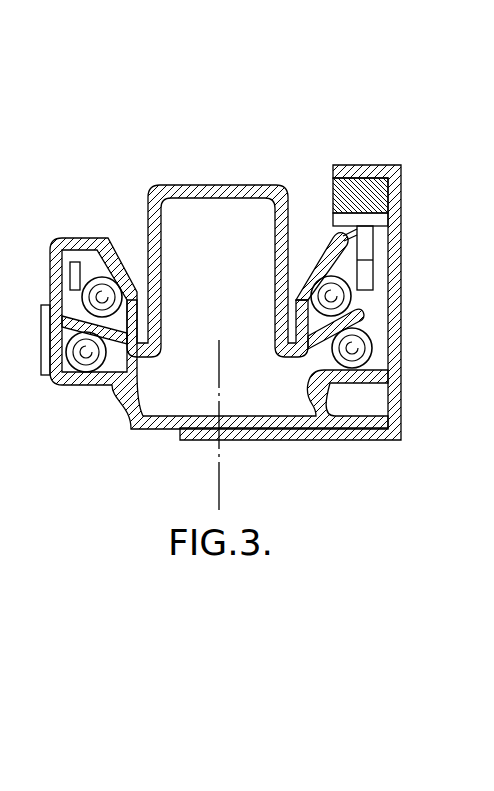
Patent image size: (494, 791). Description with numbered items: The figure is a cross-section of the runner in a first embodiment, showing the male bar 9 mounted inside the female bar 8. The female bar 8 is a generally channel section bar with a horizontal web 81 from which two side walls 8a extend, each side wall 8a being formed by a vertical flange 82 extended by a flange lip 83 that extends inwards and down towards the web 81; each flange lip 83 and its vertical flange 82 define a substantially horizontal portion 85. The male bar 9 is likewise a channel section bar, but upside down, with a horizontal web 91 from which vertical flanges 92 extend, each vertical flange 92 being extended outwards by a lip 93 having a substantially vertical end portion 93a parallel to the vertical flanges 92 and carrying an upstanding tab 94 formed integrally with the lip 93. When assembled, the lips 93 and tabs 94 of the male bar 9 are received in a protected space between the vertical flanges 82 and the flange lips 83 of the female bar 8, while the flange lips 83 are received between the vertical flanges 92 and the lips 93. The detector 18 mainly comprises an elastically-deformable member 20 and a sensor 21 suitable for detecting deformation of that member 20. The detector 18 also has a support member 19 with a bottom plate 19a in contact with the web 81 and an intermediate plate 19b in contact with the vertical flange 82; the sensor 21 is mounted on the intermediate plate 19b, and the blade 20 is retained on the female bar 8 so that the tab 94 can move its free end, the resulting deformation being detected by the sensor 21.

The female bar 8 is at (137, 430).
The side wall 8a is at (52, 238).
The horizontal web 81 is at (155, 430).
The vertical flange 82 is at (60, 376).
The flange lip 83 is at (115, 246).
The horizontal portion 85 is at (77, 262).
The male bar 9 is at (198, 184).
The horizontal web 91 is at (237, 186).
The vertical flange 92 is at (276, 283).
The lip 93 is at (121, 383).
The end portion 93a is at (73, 386).
The upstanding tab 94 is at (66, 237).
The detector 18 is at (373, 163).
The support member 19 is at (405, 352).
The bottom plate 19a is at (302, 431).
The intermediate plate 19b is at (398, 392).
The elastically-deformable member 20 is at (339, 236).
The sensor 21 is at (338, 173).